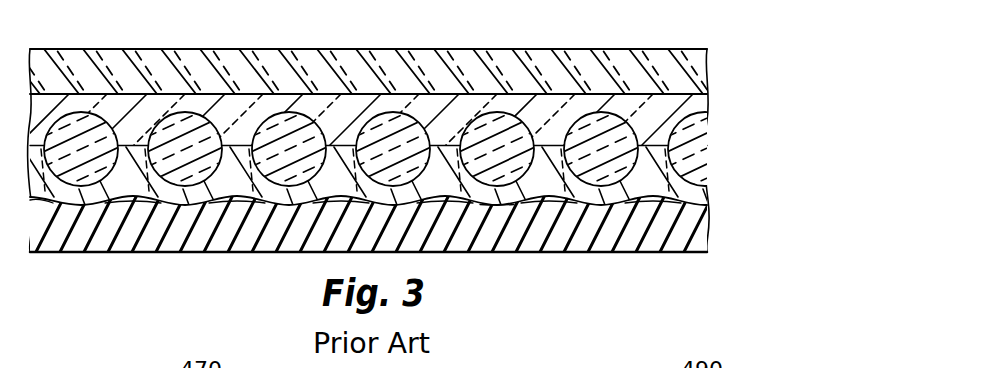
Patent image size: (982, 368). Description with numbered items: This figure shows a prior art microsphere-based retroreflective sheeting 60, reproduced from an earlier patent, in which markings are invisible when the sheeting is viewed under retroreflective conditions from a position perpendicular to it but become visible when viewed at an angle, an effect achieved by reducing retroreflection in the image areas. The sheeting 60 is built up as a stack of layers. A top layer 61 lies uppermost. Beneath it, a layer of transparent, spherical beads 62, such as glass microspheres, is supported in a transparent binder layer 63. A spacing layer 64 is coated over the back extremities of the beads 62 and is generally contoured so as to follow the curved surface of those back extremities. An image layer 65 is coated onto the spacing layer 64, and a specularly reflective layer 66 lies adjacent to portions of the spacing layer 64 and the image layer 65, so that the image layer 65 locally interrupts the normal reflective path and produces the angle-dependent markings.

The retroreflective sheeting 60 is at (608, 32).
The top layer 61 is at (708, 57).
The transparent spherical beads 62 is at (708, 145).
The transparent binder layer 63 is at (708, 105).
The spacing layer 64 is at (708, 195).
The image layer 65 is at (650, 200).
The specularly reflective layer 66 is at (495, 205).